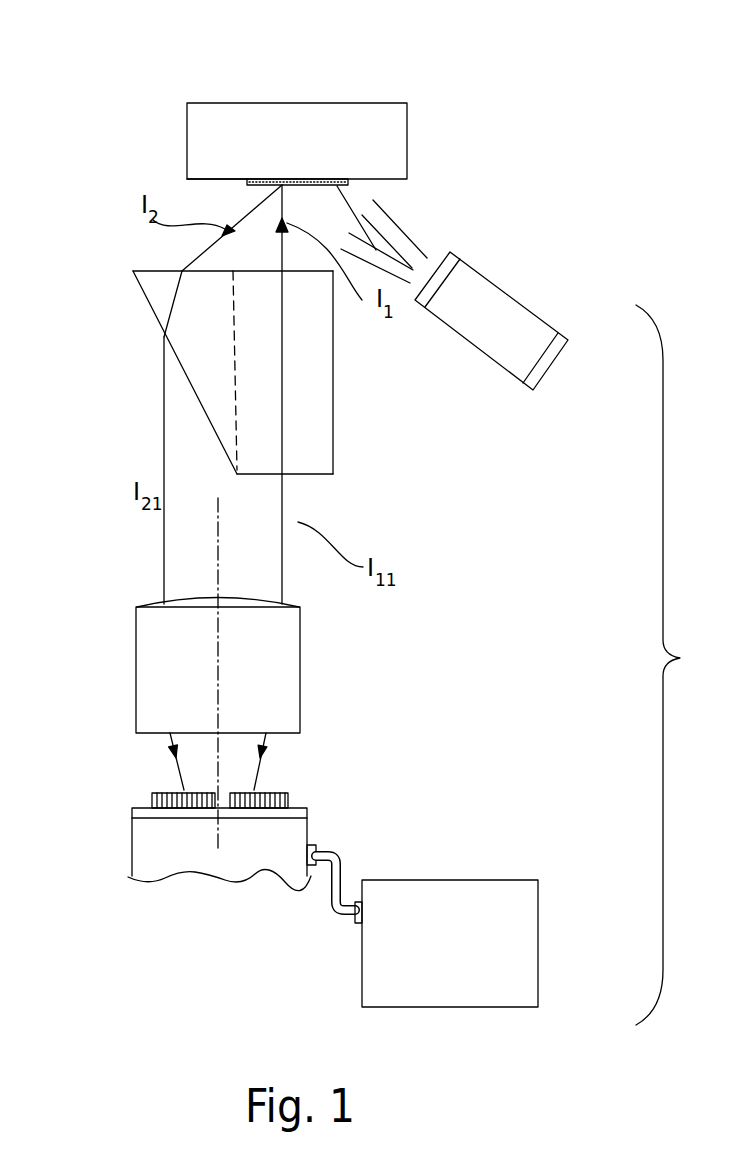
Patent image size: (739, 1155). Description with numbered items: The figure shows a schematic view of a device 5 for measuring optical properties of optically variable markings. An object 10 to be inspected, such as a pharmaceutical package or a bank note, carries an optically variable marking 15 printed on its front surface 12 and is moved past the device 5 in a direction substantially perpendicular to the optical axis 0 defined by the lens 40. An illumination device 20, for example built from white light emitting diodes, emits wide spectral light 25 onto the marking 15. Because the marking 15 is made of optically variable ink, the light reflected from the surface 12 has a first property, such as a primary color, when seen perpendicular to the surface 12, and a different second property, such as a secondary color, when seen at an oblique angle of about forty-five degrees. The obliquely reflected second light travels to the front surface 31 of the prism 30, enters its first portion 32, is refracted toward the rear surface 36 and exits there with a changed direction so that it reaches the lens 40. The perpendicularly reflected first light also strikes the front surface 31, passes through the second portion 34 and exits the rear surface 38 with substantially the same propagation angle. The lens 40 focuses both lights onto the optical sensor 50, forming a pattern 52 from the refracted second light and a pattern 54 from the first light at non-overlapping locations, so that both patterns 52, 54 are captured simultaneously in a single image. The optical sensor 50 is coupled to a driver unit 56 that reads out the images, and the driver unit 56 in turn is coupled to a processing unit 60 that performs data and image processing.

The device for measuring optical properties of optically variable markings 5 is at (670, 665).
The object 10 is at (357, 133).
The front surface 12 is at (188, 184).
The optically variable marking 15 is at (263, 179).
The illumination device 20 is at (535, 343).
The light 25 is at (397, 235).
The prism 30 is at (238, 399).
The front surface of prism 31 is at (133, 272).
The first portion of prism 32 is at (158, 302).
The second portion of prism 34 is at (318, 358).
The rear surface of first portion 36 is at (140, 288).
The rear surface 38 is at (273, 475).
The lens 40 is at (283, 640).
The optical axis 0 is at (207, 615).
The optical sensor 50 is at (243, 841).
The pattern 52 is at (183, 810).
The pattern 54 is at (263, 813).
The driver unit 56 is at (275, 852).
The processing unit 60 is at (517, 922).